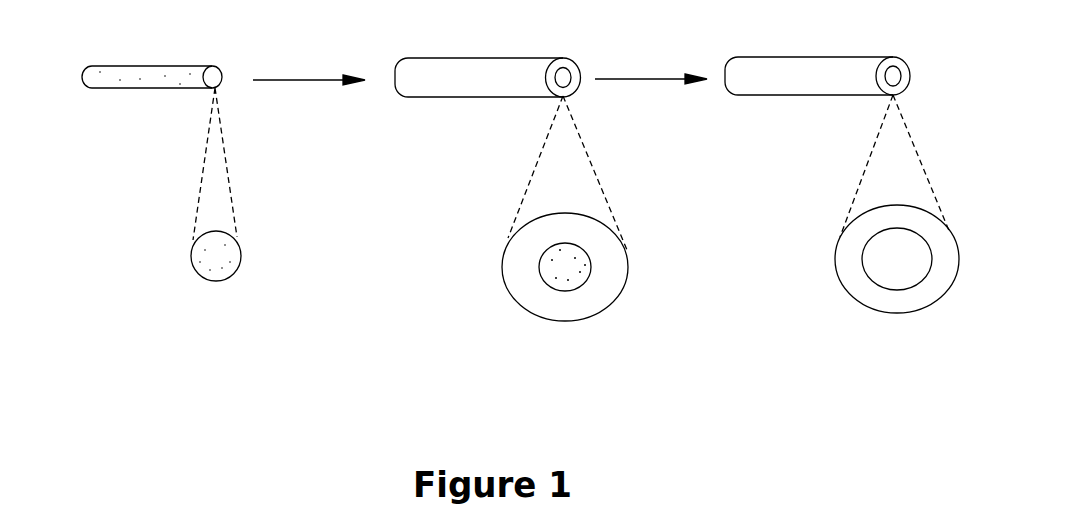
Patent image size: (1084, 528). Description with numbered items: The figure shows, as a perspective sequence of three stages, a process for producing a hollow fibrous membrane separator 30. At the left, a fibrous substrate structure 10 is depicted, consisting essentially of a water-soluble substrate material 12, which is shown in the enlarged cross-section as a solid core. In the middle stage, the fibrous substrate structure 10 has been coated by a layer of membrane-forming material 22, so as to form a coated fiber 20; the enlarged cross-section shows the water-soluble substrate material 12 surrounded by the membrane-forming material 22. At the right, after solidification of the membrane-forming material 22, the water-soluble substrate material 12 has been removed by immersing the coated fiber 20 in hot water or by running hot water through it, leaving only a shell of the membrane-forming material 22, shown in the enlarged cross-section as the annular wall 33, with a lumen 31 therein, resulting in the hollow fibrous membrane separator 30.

The fibrous substrate structure 10 is at (175, 75).
The water-soluble substrate material 12 is at (215, 253).
The coated fiber 20 is at (483, 72).
The membrane-forming material 22 is at (520, 270).
The hollow fibrous membrane separator 30 is at (805, 73).
The lumen 31 is at (907, 271).
The tube wall 33 is at (911, 342).